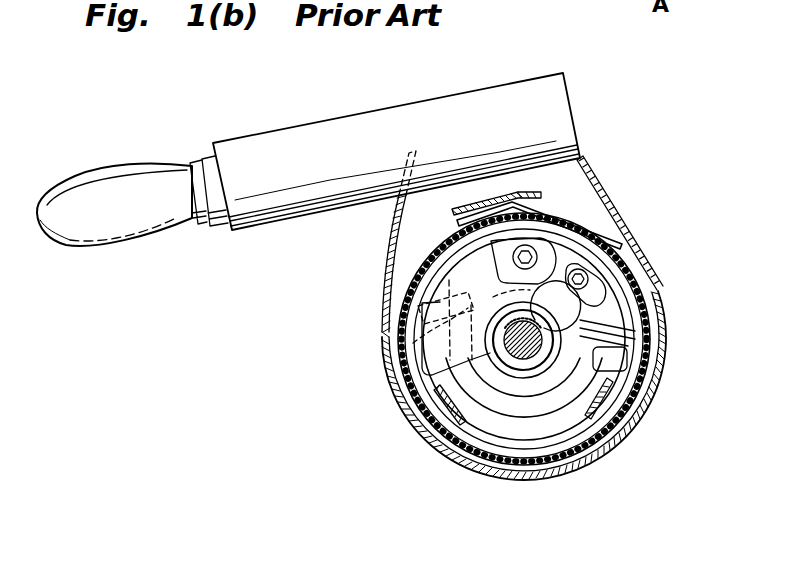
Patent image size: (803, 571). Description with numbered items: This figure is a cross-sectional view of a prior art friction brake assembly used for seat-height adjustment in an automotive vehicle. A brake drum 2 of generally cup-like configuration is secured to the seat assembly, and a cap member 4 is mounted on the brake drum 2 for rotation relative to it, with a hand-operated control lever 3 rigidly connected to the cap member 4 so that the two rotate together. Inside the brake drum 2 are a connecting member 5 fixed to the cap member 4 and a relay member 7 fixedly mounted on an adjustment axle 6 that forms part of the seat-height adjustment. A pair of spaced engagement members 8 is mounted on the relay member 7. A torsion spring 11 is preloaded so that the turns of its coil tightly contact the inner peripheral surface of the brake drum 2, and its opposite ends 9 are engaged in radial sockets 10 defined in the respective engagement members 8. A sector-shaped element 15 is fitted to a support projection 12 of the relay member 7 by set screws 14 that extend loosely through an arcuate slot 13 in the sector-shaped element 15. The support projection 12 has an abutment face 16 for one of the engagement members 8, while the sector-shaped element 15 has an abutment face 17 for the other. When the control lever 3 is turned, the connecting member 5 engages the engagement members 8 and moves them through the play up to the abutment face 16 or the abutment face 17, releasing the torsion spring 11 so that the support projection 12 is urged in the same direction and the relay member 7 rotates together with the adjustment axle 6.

The brake drum 2 is at (403, 303).
The hand-operated control lever 3 is at (390, 106).
The cap member 4 is at (395, 408).
The connecting member 5 is at (557, 463).
The adjustment axle 6 is at (500, 367).
The relay member 7 is at (505, 408).
The engagement members 8 is at (537, 383).
The opposite ends of the torsion spring 9 is at (383, 328).
The radial sockets 10 is at (383, 357).
The torsion spring 11 is at (605, 438).
The support projection 12 is at (617, 343).
The arcuate slot 13 is at (580, 275).
The set screws 14 is at (592, 274).
The sector-shaped element 15 is at (618, 300).
The abutment face 16 is at (490, 297).
The abutment face 17 is at (467, 250).